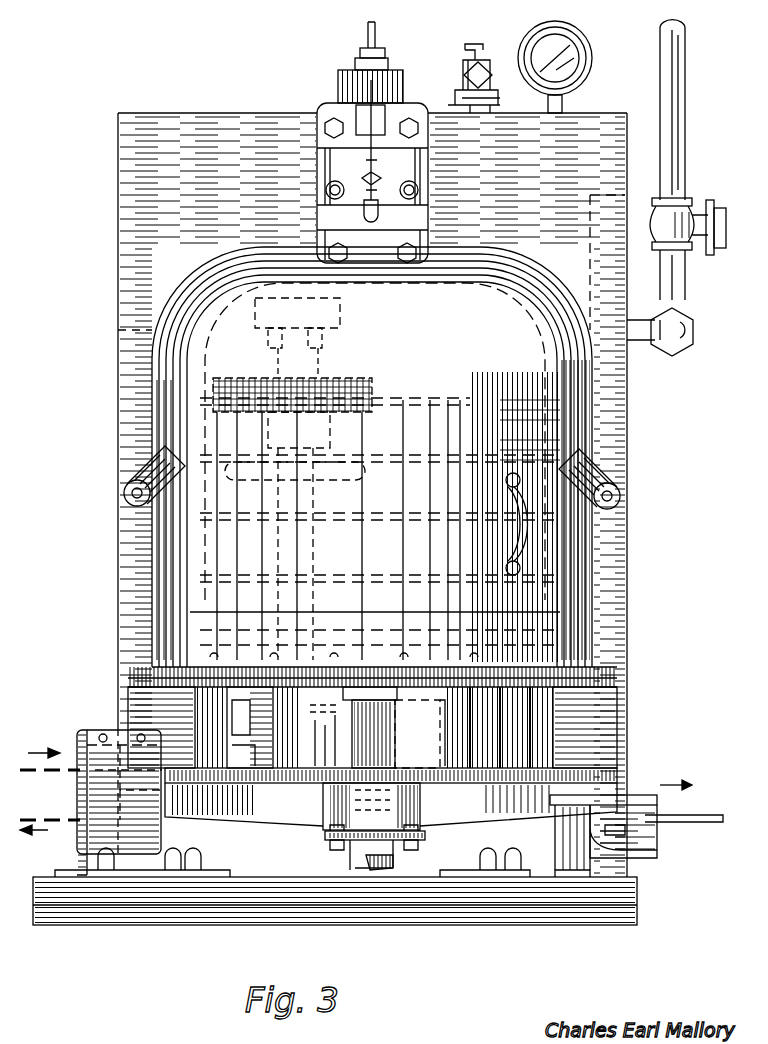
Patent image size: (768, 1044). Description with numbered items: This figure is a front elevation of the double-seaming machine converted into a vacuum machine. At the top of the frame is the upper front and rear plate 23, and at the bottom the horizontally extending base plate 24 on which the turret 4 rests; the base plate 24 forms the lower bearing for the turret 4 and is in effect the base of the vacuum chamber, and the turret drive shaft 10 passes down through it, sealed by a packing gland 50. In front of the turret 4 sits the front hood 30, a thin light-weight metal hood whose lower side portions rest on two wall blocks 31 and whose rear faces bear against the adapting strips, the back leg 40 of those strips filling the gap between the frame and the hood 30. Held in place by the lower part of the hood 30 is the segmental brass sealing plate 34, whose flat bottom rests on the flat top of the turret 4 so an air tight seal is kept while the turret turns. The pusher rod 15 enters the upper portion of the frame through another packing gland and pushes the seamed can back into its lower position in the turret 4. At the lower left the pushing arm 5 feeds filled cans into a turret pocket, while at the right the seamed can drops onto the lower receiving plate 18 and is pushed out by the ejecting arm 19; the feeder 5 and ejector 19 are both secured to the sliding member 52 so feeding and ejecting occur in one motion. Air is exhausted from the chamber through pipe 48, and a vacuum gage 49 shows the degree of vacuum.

The turret 4 is at (296, 684).
The pushing arm 5 is at (79, 720).
The turret drive shaft 10 is at (385, 868).
The rod 15 is at (367, 35).
The lower receiving plate 18 is at (690, 815).
The ejecting arm 19 is at (560, 802).
The upper front and rear plate 23 is at (205, 150).
The base plate 24 is at (270, 786).
The front hood 30 is at (448, 372).
The wall blocks 31 is at (137, 682).
The sealing plate 34 is at (356, 684).
The back leg 40 is at (128, 462).
The pipe 48 is at (672, 100).
The vacuum gage 49 is at (574, 62).
The packing gland 50 is at (326, 843).
The sliding member 52 is at (262, 877).